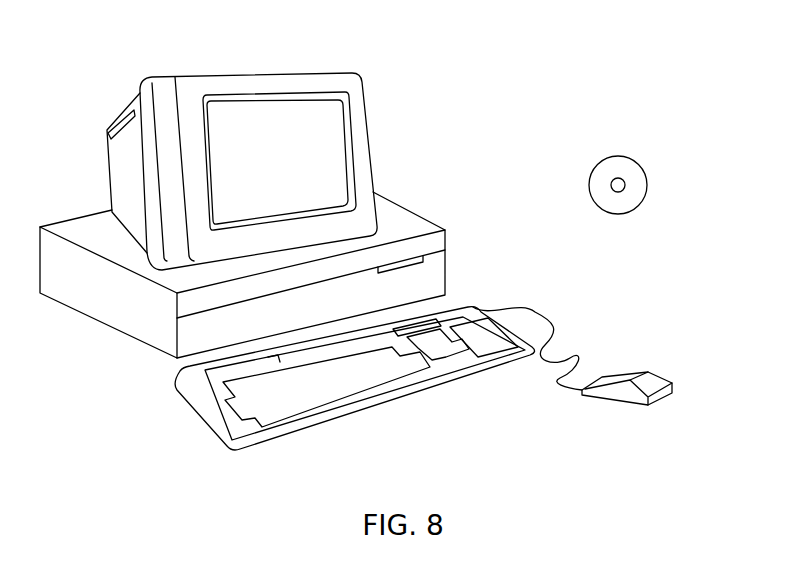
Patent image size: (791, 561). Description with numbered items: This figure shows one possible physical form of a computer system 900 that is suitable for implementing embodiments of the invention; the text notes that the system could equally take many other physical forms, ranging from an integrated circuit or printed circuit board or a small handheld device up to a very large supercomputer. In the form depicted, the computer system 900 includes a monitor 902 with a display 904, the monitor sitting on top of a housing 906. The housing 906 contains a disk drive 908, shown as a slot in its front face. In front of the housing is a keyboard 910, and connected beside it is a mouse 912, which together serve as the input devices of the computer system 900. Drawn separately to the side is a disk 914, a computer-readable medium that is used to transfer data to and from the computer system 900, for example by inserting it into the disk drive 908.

The computer system 900 is at (552, 48).
The monitor 902 is at (254, 171).
The display 904 is at (335, 127).
The housing 906 is at (283, 293).
The disk drive 908 is at (423, 250).
The keyboard 910 is at (366, 412).
The mouse 912 is at (663, 380).
The disk 914 is at (635, 157).